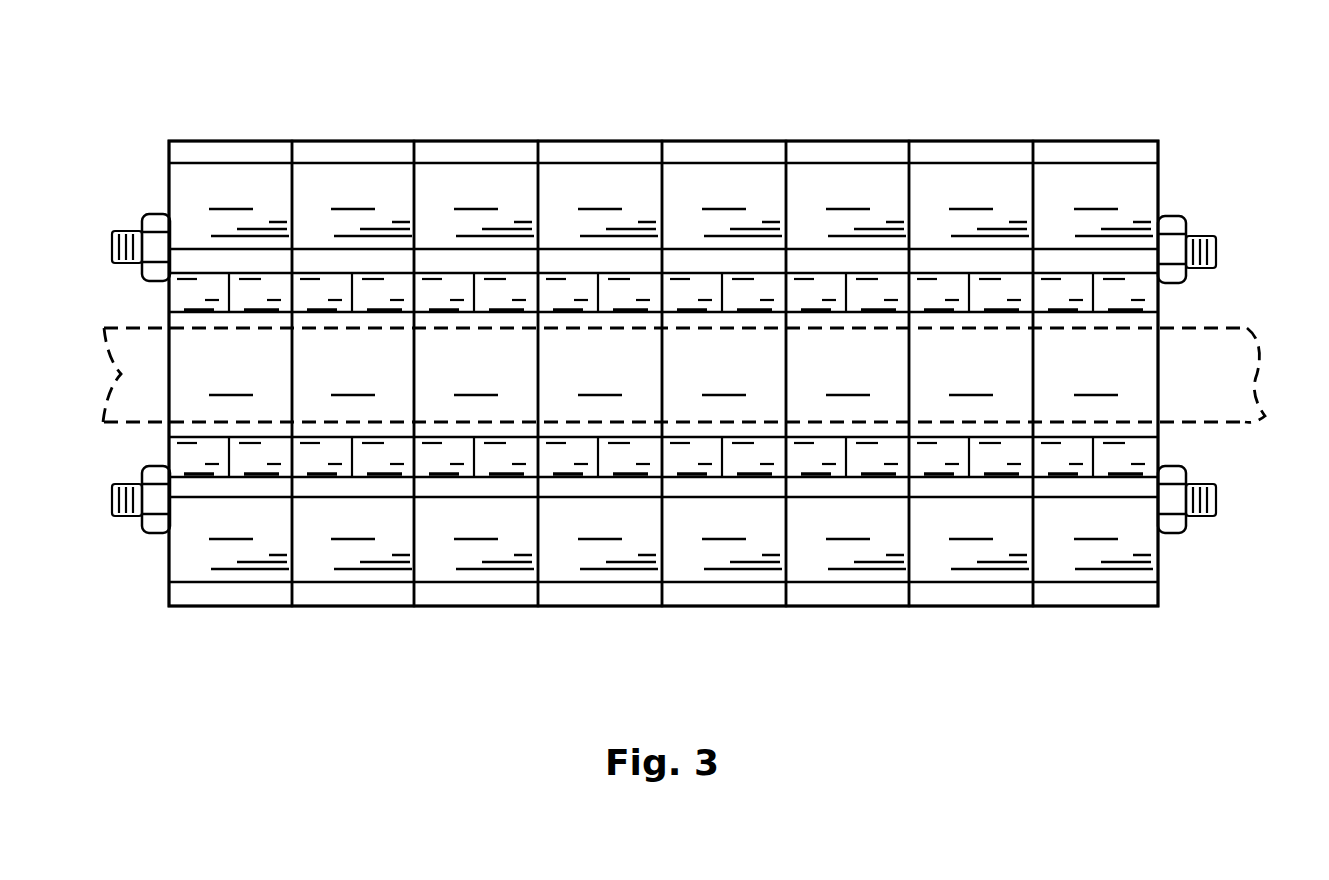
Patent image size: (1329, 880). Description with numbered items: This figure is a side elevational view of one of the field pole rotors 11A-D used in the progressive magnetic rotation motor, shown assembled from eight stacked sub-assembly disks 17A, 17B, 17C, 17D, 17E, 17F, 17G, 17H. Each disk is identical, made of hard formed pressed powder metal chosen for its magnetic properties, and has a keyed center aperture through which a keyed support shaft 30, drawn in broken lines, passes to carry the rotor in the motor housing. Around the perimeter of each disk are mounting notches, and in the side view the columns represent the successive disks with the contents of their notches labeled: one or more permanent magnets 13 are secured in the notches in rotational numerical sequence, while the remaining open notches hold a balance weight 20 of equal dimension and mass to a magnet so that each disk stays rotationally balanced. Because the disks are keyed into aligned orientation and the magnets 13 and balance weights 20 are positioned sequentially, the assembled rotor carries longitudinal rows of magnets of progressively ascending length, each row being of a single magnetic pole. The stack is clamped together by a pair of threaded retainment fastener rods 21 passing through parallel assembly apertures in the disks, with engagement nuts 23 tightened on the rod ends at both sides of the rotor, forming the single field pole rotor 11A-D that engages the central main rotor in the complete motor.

The field pole rotors 11A-D is at (1161, 139).
The permanent magnet 13 is at (250, 141).
The balance weight 20 is at (622, 141).
The first sub-assembly disk 17A is at (218, 135).
The second sub-assembly disk 17B is at (342, 135).
The third sub-assembly disk 17C is at (466, 135).
The fourth sub-assembly disk 17D is at (590, 135).
The fifth sub-assembly disk 17E is at (714, 135).
The sixth sub-assembly disk 17F is at (840, 135).
The seventh sub-assembly disk 17G is at (968, 135).
The eighth sub-assembly disk 17H is at (1092, 135).
The threaded retainment fastener rod 21 is at (130, 231).
The engagement nut 23 is at (157, 212).
The keyed support shaft 30 is at (1208, 327).